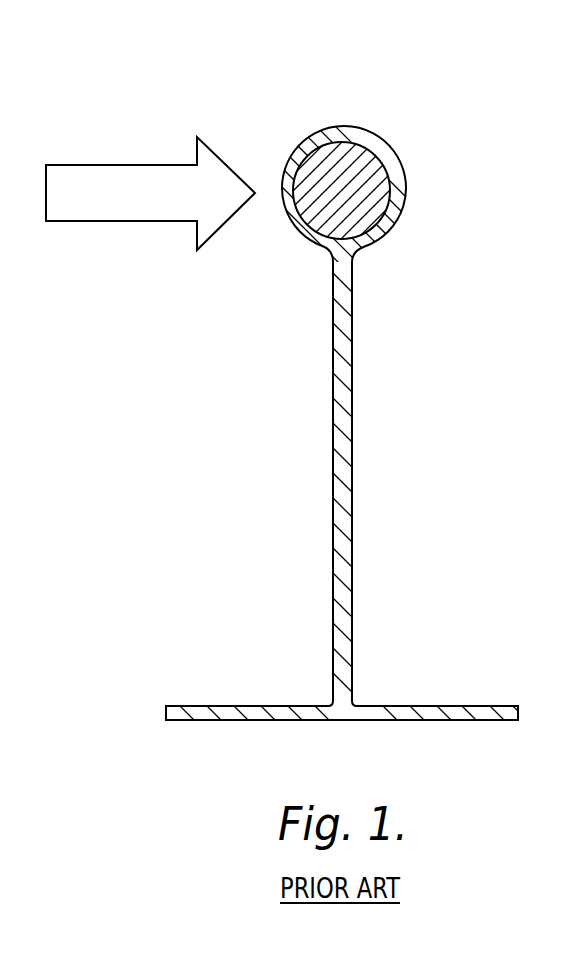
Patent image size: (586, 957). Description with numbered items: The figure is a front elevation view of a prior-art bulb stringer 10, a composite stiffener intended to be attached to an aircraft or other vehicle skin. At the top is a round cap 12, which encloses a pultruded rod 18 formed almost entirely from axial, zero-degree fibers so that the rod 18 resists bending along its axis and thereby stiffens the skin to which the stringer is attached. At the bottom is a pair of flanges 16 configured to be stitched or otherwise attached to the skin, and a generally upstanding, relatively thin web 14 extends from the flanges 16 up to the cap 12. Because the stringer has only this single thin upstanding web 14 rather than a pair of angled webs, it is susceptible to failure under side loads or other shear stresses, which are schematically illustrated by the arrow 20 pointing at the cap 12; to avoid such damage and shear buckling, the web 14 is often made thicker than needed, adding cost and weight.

The bulb stringer 10 is at (283, 90).
The round cap 12 is at (385, 152).
The upstanding web 14 is at (340, 453).
The flanges 16 is at (227, 710).
The pultruded rod 18 is at (367, 214).
The arrow 20 is at (128, 208).